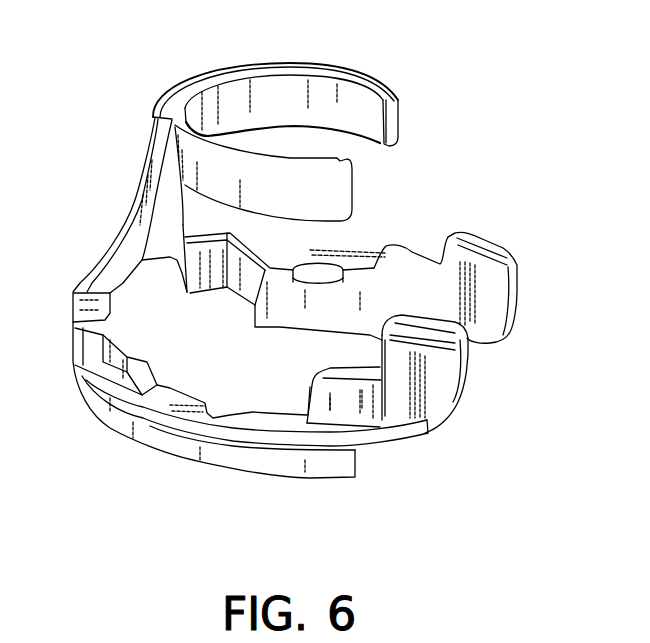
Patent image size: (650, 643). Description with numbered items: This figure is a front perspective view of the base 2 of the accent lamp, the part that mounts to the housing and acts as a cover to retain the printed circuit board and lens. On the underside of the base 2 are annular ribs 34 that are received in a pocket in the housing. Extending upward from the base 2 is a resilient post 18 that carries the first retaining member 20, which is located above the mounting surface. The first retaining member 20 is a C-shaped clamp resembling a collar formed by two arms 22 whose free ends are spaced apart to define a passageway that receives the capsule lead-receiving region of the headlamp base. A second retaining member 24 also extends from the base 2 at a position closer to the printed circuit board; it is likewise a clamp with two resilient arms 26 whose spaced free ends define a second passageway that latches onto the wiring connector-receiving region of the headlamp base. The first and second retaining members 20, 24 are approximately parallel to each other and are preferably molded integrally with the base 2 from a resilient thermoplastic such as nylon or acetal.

The base 2 is at (393, 443).
The resilient post 18 is at (140, 192).
The first retaining member 20 is at (260, 65).
The arms 22 is at (400, 98).
The second retaining member 24 is at (422, 257).
The resilient arms 26 is at (505, 245).
The annular ribs 34 is at (160, 445).